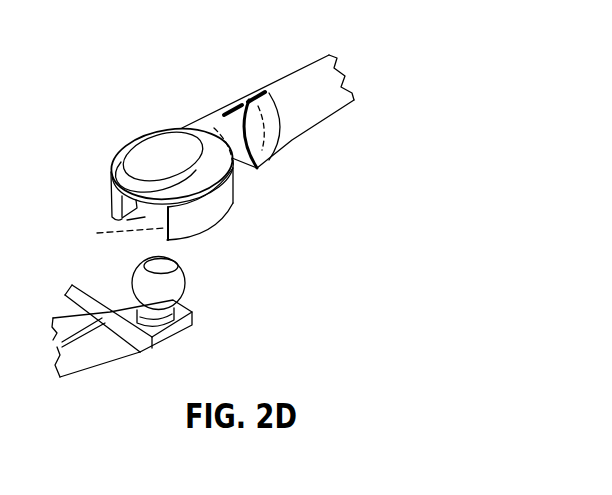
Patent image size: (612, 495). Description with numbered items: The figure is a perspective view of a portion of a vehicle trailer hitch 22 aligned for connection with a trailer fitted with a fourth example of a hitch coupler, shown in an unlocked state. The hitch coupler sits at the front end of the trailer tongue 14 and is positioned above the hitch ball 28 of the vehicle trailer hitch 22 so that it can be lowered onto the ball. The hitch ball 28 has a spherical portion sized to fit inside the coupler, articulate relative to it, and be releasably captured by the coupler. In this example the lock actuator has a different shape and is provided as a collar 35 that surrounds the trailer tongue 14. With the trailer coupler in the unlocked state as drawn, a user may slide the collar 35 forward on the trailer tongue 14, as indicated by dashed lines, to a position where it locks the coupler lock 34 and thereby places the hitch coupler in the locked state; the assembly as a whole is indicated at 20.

The trailer tongue 14 is at (307, 80).
The socket housing 20 is at (118, 98).
The vehicle trailer hitch 22 is at (91, 347).
The hitch ball 28 is at (186, 289).
The coupler lock 34 is at (165, 240).
The collar 35 is at (282, 118).